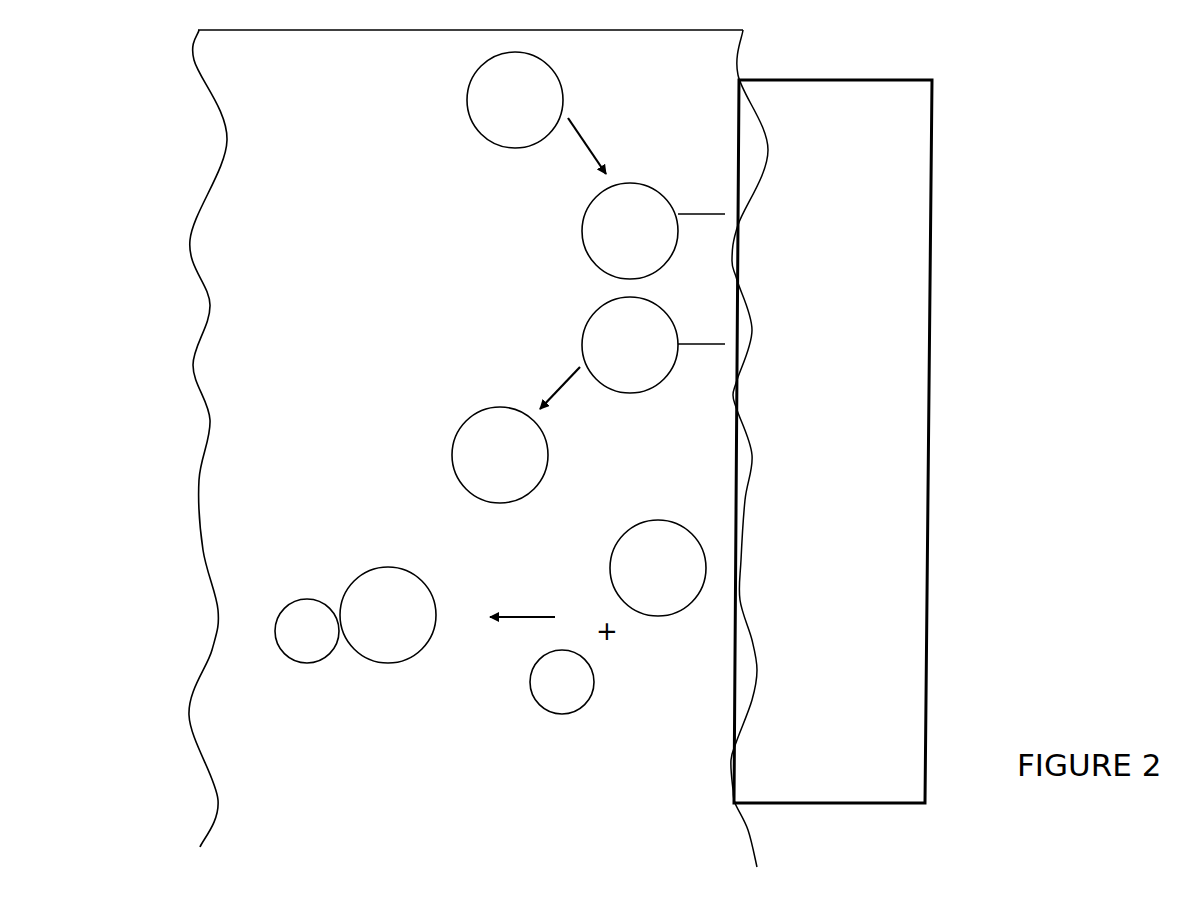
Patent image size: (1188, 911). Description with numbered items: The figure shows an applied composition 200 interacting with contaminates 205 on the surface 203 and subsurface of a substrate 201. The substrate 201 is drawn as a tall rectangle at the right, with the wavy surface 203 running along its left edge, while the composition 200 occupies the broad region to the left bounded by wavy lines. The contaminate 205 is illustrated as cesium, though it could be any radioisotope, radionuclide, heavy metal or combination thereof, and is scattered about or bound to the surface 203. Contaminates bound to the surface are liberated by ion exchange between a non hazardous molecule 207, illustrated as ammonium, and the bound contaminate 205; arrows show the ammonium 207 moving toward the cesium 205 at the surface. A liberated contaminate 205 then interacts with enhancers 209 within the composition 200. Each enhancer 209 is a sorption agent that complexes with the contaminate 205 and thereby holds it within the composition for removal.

The applied composition 200 is at (466, 425).
The substrate 201 is at (833, 441).
The surface 203 is at (731, 806).
The contaminate 205 is at (532, 423).
The non hazardous molecule 207 is at (596, 222).
The enhancer 209 is at (434, 656).